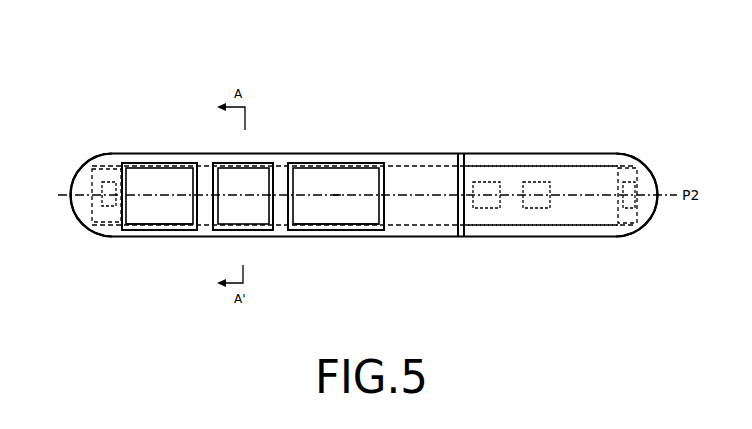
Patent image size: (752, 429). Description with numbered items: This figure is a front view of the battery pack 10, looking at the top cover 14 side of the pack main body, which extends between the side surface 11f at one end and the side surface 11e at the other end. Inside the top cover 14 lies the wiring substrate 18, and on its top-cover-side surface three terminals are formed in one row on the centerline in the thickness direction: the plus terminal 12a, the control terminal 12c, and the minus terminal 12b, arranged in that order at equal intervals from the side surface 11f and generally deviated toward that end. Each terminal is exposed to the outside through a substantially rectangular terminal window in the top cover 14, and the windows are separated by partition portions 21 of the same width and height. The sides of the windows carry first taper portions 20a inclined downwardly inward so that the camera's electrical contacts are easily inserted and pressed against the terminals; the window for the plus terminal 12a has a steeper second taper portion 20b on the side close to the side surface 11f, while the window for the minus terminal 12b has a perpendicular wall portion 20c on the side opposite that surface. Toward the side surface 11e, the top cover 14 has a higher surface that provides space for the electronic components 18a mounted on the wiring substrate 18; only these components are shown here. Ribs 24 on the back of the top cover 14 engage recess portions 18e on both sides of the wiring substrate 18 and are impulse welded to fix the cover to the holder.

The battery pack 10 is at (446, 120).
The side surface 11e is at (671, 172).
The side surface 11f is at (71, 196).
The plus terminal 12a is at (130, 162).
The minus terminal 12b is at (365, 163).
The control terminal 12c is at (253, 163).
The top cover 14 is at (404, 180).
The wiring substrate 18 is at (570, 177).
The electronic components 18a is at (537, 182).
The recess portions 18e is at (92, 215).
The first taper portions 20a is at (158, 163).
The second taper portion 20b is at (128, 230).
The perpendicular wall portion 20c is at (380, 229).
The partition portions 21 is at (200, 162).
The ribs 24 is at (110, 153).